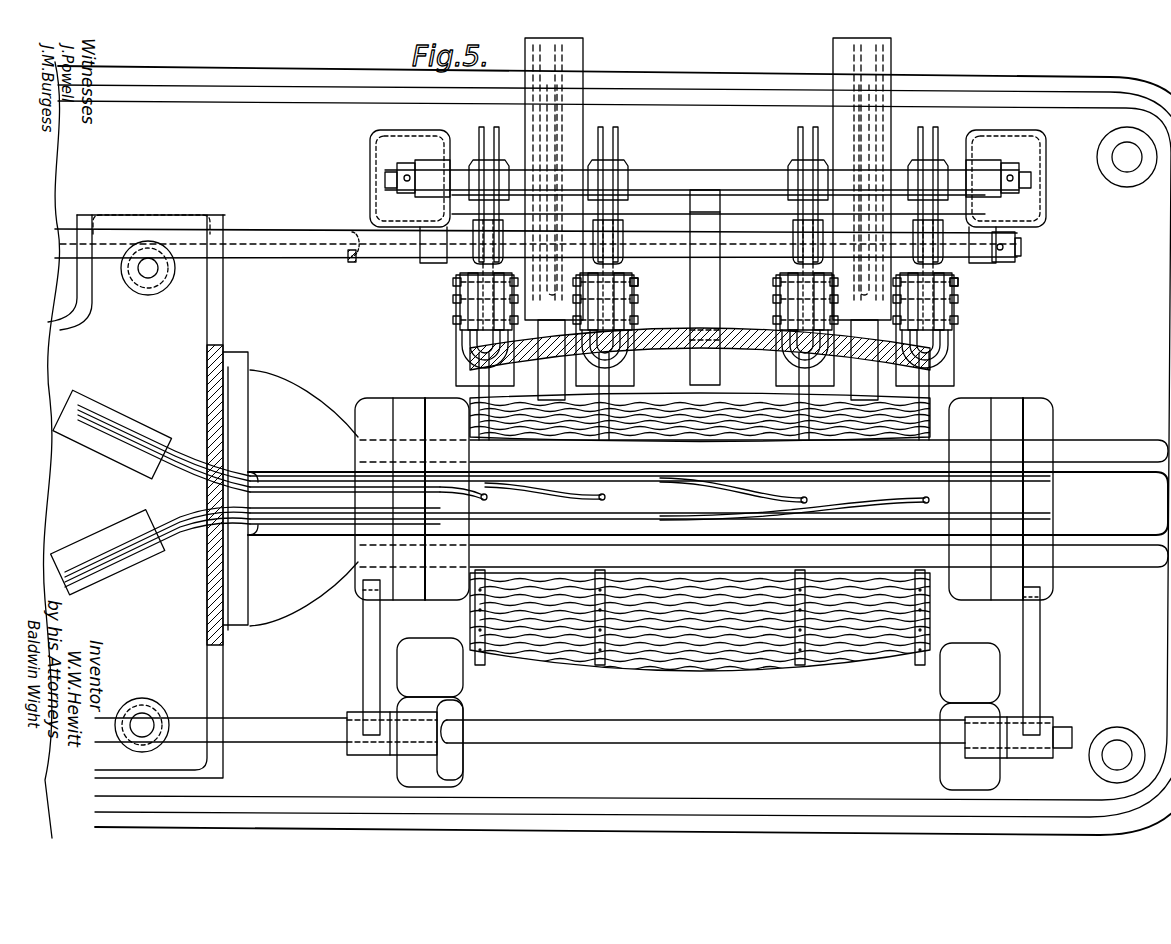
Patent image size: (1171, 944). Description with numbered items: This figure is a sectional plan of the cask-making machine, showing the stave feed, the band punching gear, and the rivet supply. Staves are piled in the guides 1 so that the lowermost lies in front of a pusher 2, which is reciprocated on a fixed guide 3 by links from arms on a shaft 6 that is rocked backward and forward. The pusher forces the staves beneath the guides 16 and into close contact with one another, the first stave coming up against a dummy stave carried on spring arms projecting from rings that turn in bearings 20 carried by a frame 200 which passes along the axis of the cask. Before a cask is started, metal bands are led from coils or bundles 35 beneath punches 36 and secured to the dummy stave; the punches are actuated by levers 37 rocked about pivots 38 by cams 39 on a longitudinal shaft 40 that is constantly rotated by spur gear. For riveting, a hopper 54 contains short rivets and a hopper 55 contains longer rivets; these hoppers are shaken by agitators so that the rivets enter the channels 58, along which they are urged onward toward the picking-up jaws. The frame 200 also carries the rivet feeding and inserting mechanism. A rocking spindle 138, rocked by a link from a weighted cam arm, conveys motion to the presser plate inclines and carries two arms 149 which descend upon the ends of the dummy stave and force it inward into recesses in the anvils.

The guides 1 is at (705, 287).
The pusher 2 is at (548, 376).
The fixed guide 3 is at (584, 57).
The shaft 6 is at (348, 262).
The guides 16 is at (458, 382).
The bearings 20 is at (704, 499).
The coils or bundles 35 is at (487, 130).
The punches 36 is at (479, 350).
The levers 37 is at (480, 322).
The pivots 38 is at (639, 280).
The cams 39 is at (485, 262).
The longitudinal shaft 40 is at (60, 236).
The hopper 54 is at (150, 551).
The hopper 55 is at (151, 441).
The channels 58 is at (302, 487).
The rocking spindle 138 is at (242, 727).
The arms 149 is at (365, 645).
The frame 200 is at (708, 515).